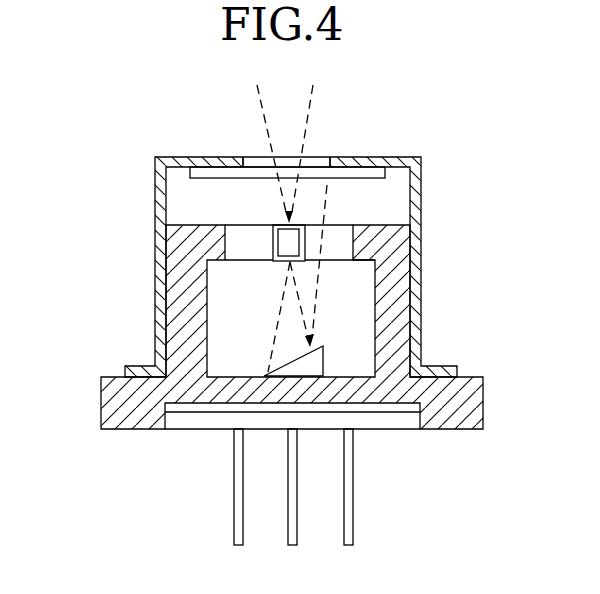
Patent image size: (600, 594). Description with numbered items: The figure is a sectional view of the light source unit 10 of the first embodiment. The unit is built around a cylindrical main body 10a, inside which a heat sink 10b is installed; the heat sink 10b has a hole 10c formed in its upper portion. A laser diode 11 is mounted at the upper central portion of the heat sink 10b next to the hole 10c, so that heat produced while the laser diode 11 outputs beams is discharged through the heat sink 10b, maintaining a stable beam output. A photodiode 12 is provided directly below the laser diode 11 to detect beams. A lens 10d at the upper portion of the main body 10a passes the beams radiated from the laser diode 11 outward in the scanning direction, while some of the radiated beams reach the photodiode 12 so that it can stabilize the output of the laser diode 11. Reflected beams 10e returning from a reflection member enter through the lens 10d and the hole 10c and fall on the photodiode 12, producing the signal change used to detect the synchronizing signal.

The light source unit 10 is at (285, 314).
The main body 10a is at (157, 197).
The heat sink 10b is at (397, 297).
The hole 10c is at (240, 249).
The lens 10d is at (243, 166).
The reflected beams 10e is at (327, 185).
The laser diode 11 is at (293, 243).
The photodiode 12 is at (313, 363).